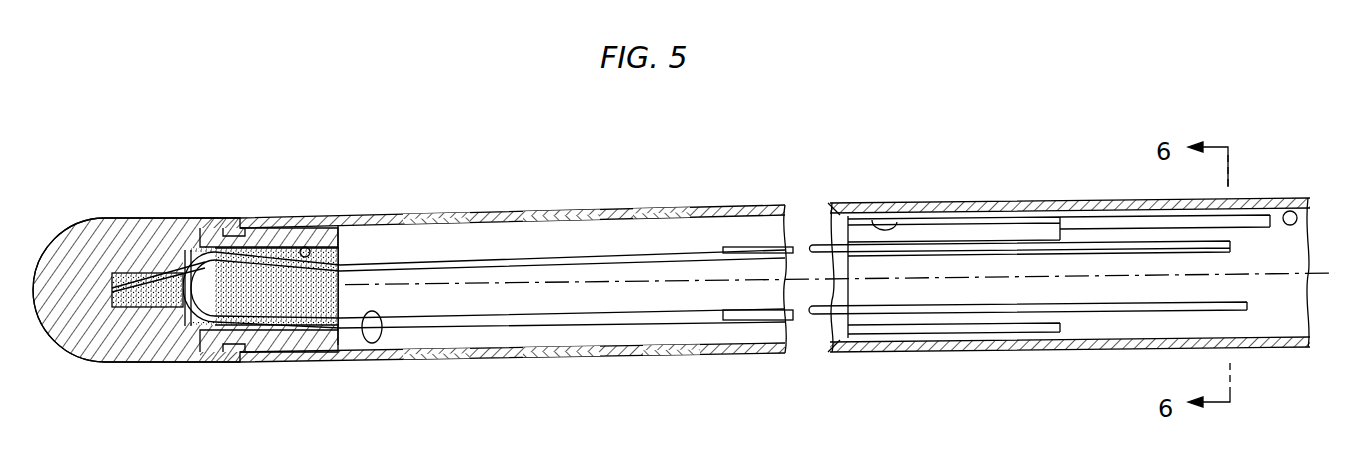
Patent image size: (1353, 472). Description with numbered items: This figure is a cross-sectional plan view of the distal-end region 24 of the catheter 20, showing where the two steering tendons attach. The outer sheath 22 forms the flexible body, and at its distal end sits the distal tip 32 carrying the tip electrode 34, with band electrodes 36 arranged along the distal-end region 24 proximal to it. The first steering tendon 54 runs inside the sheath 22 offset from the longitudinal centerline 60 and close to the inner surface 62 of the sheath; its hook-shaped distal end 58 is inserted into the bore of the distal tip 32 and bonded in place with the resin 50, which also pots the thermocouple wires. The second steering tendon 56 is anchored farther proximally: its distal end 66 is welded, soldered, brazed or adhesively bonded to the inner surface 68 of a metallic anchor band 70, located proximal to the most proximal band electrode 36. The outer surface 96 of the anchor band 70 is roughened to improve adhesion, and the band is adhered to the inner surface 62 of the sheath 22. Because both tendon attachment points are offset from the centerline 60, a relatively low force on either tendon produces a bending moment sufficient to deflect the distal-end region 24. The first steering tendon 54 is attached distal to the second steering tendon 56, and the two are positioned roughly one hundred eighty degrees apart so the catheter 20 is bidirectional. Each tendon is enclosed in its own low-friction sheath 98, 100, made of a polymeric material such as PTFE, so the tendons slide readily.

The catheter 20 is at (757, 360).
The sheath 22 is at (984, 174).
The distal-end region 24 is at (340, 212).
The distal tip 32 is at (138, 217).
The tip electrode 34 is at (117, 368).
The band electrodes 36 is at (480, 252).
The resin 50 is at (243, 305).
The first steering tendon 54 is at (317, 342).
The second steering tendon 56 is at (1015, 205).
The distal end of the first steering tendon 58 is at (192, 340).
The longitudinal centerline 60 is at (1318, 268).
The inner surface of the sheath 62 is at (365, 343).
The distal end of the second steering tendon 66 is at (878, 218).
The inner surface of the anchor band 68 is at (870, 292).
The anchor band 70 is at (836, 297).
The outer surface of the anchor band 96 is at (937, 207).
The sheath of the first steering tendon 98 is at (625, 355).
The sheath of the second steering tendon 100 is at (1110, 205).